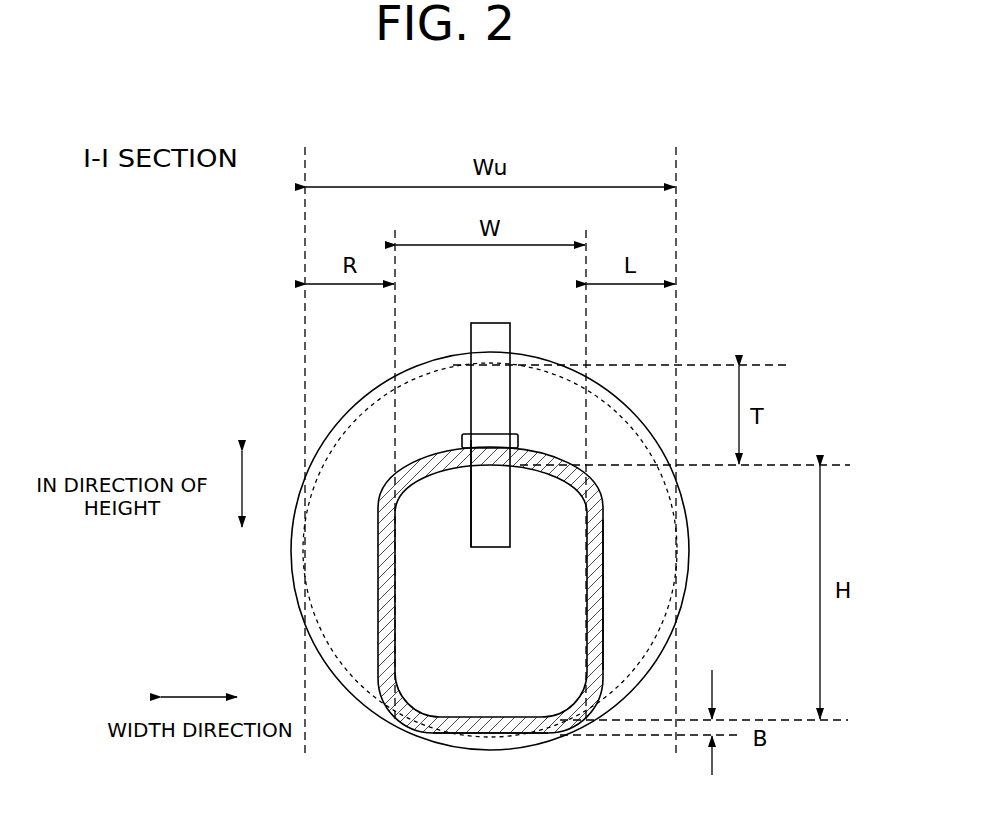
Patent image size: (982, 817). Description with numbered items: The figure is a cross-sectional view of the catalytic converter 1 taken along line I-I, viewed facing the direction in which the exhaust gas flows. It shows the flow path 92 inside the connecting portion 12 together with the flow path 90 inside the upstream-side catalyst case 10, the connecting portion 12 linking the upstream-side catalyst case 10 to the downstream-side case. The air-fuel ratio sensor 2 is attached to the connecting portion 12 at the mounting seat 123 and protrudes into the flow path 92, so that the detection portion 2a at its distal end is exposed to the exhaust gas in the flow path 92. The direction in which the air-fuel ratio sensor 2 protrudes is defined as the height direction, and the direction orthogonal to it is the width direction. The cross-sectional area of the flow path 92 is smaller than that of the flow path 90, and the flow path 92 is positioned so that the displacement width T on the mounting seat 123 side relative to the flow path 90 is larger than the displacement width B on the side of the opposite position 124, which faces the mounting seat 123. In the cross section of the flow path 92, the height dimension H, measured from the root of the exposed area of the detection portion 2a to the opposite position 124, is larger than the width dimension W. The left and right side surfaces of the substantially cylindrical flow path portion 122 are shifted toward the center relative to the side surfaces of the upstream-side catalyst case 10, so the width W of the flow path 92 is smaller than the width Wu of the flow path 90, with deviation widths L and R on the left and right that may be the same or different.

The catalytic converter 1 is at (713, 338).
The air-fuel ratio sensor 2 is at (490, 323).
The detection portion 2a is at (468, 497).
The upstream-side catalyst case 10 is at (630, 403).
The connecting portion 12 is at (632, 600).
The flow path portion 122 is at (603, 587).
The mounting seat 123 is at (520, 436).
The opposite position 124 is at (477, 710).
The flow path 90 is at (650, 557).
The flow path 92 is at (504, 626).